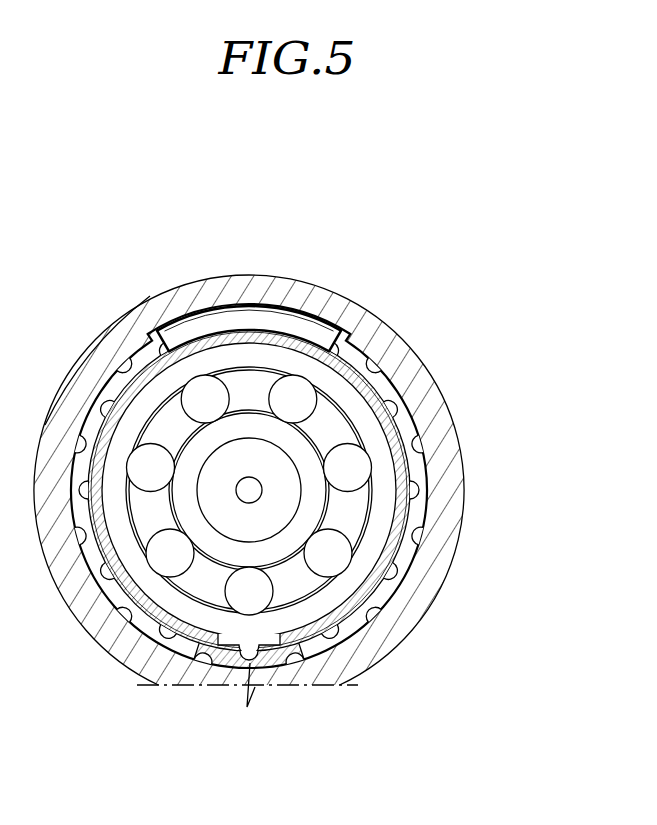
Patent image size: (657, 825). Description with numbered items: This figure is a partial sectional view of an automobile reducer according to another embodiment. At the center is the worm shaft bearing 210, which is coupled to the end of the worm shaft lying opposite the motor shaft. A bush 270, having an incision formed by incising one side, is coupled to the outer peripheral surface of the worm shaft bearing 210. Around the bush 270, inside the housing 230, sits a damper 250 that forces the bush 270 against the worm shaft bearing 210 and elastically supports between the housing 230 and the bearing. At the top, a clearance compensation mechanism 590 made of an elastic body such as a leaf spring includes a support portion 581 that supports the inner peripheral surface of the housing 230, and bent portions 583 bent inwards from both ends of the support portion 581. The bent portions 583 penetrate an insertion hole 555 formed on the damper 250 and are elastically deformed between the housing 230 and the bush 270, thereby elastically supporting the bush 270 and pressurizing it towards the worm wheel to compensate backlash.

The worm shaft bearing 210 is at (357, 463).
The housing 230 is at (402, 350).
The damper 250 is at (413, 512).
The bush 270 is at (370, 586).
The insertion hole 555 is at (268, 320).
The support portion 581 is at (238, 304).
The bent portions 583 is at (168, 328).
The clearance compensation mechanism 590 is at (219, 248).